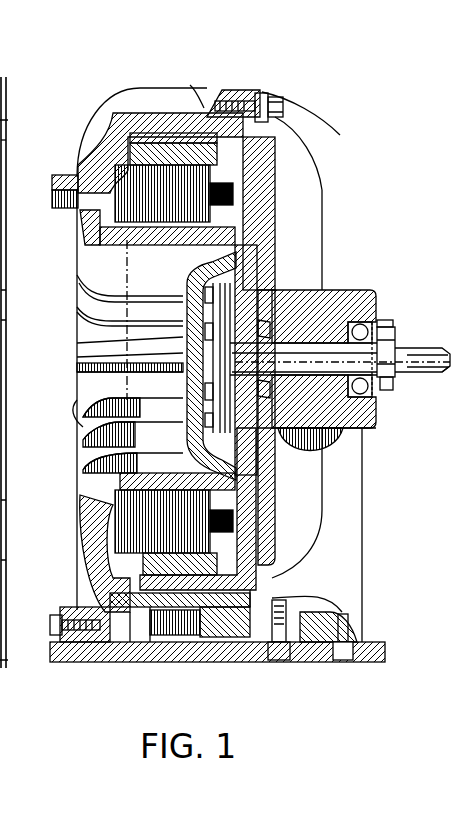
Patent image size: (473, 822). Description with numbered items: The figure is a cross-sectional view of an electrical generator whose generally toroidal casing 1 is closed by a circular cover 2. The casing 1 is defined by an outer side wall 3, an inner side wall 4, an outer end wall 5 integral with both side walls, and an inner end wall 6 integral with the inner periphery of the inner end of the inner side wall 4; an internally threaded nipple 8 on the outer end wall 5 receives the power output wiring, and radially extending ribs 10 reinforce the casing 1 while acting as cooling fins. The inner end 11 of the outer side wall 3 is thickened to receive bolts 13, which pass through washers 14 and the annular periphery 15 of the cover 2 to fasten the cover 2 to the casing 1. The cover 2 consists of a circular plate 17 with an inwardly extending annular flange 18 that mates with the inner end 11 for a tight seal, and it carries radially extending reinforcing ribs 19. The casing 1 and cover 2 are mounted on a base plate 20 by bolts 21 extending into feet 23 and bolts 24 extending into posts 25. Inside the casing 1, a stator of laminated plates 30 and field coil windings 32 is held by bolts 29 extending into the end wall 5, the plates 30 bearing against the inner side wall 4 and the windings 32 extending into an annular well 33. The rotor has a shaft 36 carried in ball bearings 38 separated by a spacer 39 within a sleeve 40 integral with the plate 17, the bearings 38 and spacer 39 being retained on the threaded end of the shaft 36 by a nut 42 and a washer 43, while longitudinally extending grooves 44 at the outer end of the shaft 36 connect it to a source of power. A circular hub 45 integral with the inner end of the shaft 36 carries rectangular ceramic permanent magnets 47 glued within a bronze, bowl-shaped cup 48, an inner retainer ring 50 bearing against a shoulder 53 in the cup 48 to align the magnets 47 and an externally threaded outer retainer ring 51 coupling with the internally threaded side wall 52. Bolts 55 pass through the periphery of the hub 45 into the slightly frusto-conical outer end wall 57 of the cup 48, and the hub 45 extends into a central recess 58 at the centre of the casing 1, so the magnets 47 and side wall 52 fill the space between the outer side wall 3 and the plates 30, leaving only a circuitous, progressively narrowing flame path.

The casing 1 is at (49, 120).
The cover 2 is at (374, 132).
The outer side wall 3 is at (172, 114).
The inner side wall 4 is at (165, 245).
The outer end wall 5 is at (110, 130).
The inner end wall 6 is at (217, 355).
The internally threaded nipple 8 is at (72, 176).
The radially extending ribs 10 is at (144, 90).
The inner end 11 is at (255, 590).
The bolts 13 is at (276, 102).
The washers 14 is at (264, 94).
The annular periphery 15 is at (260, 90).
The circular plate 17 is at (275, 197).
The annular flange 18 is at (202, 90).
The reinforcing ribs 19 is at (312, 220).
The base plate 20 is at (378, 664).
The bolts 21 is at (338, 662).
The feet 23 is at (332, 612).
The bolts 24 is at (50, 630).
The posts 25 is at (72, 614).
The bolts 29 is at (110, 230).
The laminated plates 30 is at (222, 185).
The field coil windings 32 is at (83, 223).
The annular well 33 is at (80, 516).
The shaft 36 is at (448, 350).
The ball bearings 38 is at (350, 292).
The spacer 39 is at (345, 292).
The sleeve 40 is at (360, 433).
The nut 42 is at (395, 327).
The washer 43 is at (383, 322).
The longitudinally extending grooves 44 is at (438, 358).
The circular hub 45 is at (80, 366).
The permanent magnets 47 is at (143, 570).
The cup 48 is at (160, 560).
The inner retainer ring 50 is at (292, 120).
The outer retainer ring 51 is at (38, 116).
The side wall 52 is at (188, 70).
The shoulder 53 is at (292, 572).
The bolts 55 is at (275, 267).
The outer end wall 57 is at (330, 492).
The central recess 58 is at (176, 292).